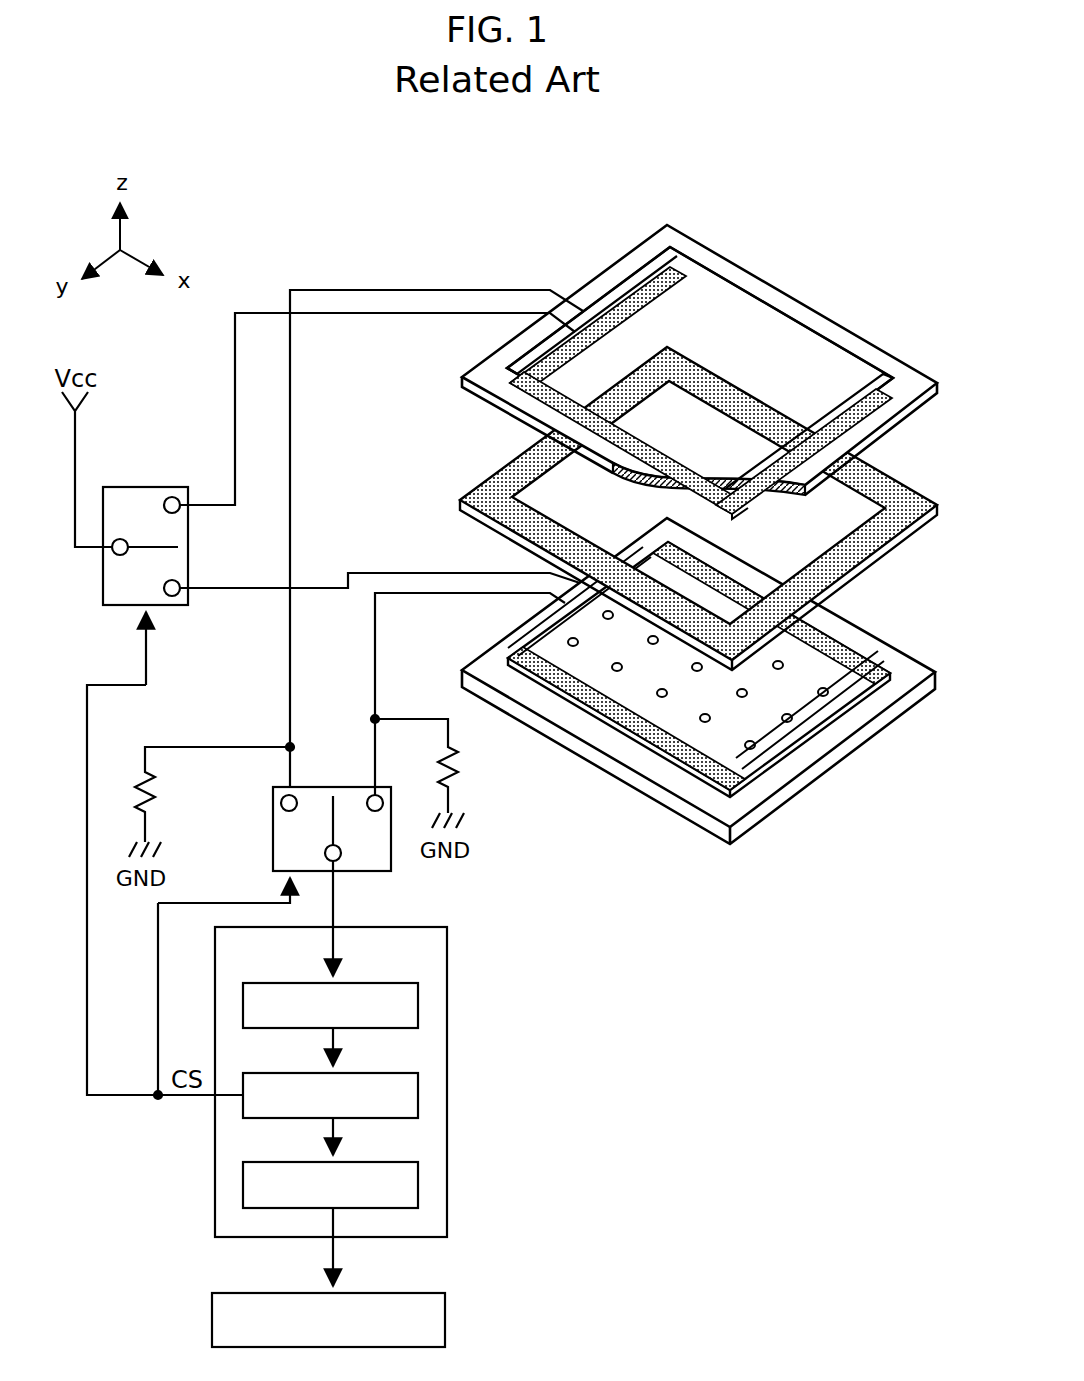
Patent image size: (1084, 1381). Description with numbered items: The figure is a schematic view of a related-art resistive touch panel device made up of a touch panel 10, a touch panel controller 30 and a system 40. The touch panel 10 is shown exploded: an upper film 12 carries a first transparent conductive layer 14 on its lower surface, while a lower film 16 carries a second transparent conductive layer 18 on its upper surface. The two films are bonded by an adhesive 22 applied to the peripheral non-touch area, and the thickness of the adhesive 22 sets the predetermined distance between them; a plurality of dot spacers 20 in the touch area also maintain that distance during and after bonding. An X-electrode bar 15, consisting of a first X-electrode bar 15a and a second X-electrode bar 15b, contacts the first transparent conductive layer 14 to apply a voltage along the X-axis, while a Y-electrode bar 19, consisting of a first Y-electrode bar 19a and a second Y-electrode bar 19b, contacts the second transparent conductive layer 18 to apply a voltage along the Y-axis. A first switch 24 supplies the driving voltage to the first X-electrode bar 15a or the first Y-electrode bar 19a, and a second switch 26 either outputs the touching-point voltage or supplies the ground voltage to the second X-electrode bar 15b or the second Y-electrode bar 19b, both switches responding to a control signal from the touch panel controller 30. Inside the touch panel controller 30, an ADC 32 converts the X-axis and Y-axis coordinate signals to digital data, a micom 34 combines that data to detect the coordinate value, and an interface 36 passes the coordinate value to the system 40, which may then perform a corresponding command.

The touch panel 10 is at (562, 539).
The upper film 12 is at (694, 243).
The first transparent conductive layer 14 is at (708, 481).
The X-electrode bar 15 is at (700, 350).
The first X-electrode bar 15a is at (703, 259).
The second X-electrode bar 15b is at (846, 390).
The lower film 16 is at (636, 779).
The second transparent conductive layer 18 is at (717, 720).
The Y-electrode bar 19 is at (713, 720).
The first Y-electrode bar 19a is at (878, 676).
The second Y-electrode bar 19b is at (732, 777).
The dot spacers 20 is at (828, 688).
The adhesive 22 is at (903, 500).
The first switch 24 is at (157, 492).
The second switch 26 is at (273, 831).
The touch panel controller 30 is at (361, 1082).
The analog-digital converter (ADC) 32 is at (390, 991).
The micom 34 is at (390, 1081).
The interface 36 is at (390, 1171).
The system 40 is at (442, 1322).